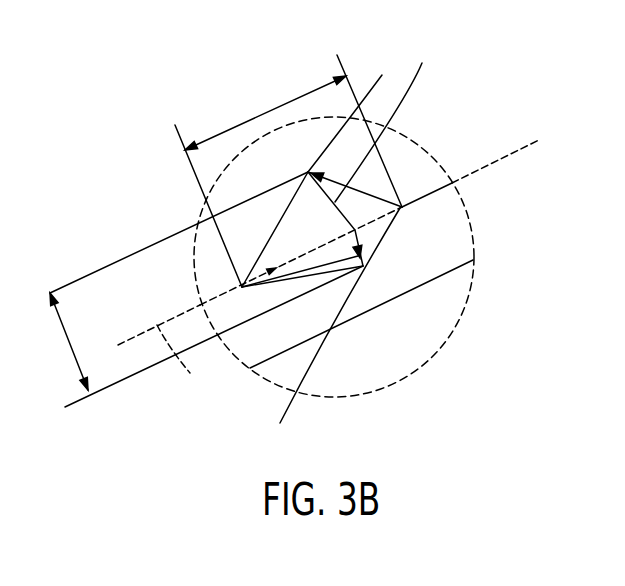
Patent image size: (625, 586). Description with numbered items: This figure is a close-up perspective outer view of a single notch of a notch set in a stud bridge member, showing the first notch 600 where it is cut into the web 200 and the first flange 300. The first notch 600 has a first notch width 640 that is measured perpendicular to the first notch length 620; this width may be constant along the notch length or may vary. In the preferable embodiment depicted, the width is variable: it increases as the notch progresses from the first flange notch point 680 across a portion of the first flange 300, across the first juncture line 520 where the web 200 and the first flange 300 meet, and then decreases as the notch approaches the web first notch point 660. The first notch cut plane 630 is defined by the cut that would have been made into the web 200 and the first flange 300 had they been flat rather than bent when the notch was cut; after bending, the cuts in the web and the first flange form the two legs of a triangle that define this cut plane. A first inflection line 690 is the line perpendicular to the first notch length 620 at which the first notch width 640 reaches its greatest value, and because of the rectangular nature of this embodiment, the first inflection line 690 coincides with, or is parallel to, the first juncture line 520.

The web 200 is at (425, 173).
The first flange 300 is at (452, 235).
The first juncture line 520 is at (160, 357).
The first notch 600 is at (173, 197).
The first notch length 620 is at (66, 340).
The first notch cut plane 630 is at (384, 117).
The first notch width 640 is at (256, 116).
The web first notch point 660 is at (350, 108).
The first flange notch point 680 is at (334, 334).
The first inflection line 690 is at (240, 286).